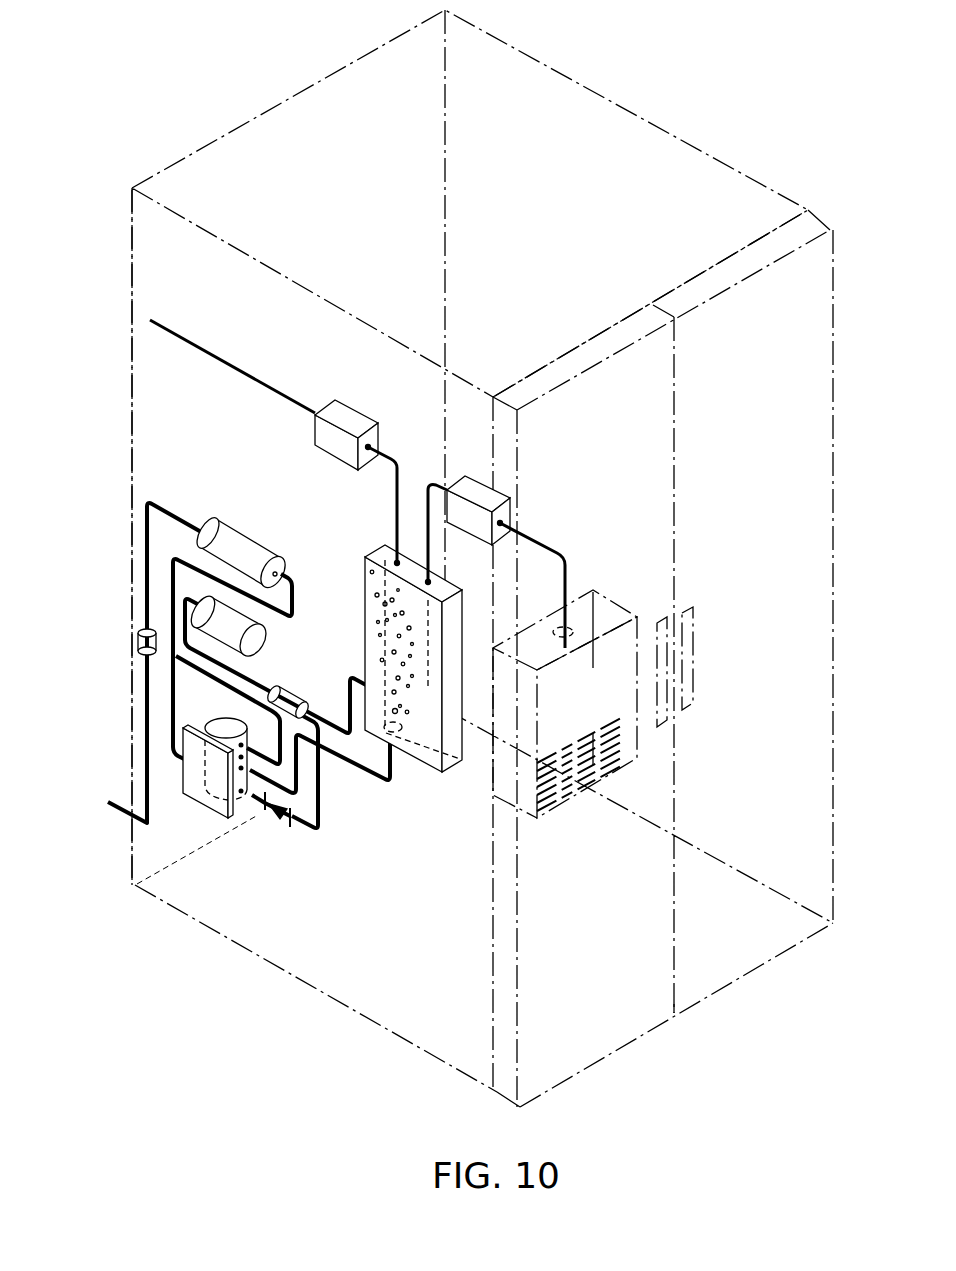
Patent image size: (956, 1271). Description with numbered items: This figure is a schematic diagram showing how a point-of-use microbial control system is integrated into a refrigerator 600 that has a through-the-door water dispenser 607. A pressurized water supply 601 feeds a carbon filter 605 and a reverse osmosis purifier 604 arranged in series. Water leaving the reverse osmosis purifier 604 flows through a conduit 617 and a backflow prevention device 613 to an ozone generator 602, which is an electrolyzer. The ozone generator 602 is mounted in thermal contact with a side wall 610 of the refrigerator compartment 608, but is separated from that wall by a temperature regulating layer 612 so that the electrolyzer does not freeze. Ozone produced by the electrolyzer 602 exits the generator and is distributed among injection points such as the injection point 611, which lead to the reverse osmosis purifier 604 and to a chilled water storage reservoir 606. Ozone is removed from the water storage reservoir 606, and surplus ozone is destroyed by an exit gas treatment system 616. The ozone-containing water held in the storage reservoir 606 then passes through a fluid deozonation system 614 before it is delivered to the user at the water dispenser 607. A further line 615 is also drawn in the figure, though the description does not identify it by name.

The refrigerator 600 is at (720, 163).
The pressurized water supply 601 is at (118, 810).
The ozone generator 602 is at (212, 718).
The reverse osmosis purifier 604 is at (267, 643).
The carbon filter 605 is at (252, 540).
The chilled water storage reservoir 606 is at (380, 548).
The water dispenser 607 is at (605, 712).
The refrigerator compartment 608 is at (557, 230).
The side wall 610 is at (130, 418).
The injection point 611 is at (135, 632).
The temperature regulating layer 612 is at (183, 780).
The backflow prevention device 613 is at (273, 822).
The fluid deozonation system 614 is at (452, 478).
The power line 615 is at (156, 328).
The exit gas treatment system 616 is at (350, 404).
The conduit 617 is at (322, 792).